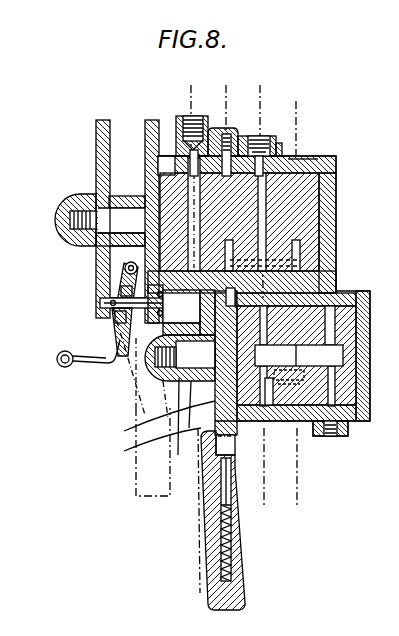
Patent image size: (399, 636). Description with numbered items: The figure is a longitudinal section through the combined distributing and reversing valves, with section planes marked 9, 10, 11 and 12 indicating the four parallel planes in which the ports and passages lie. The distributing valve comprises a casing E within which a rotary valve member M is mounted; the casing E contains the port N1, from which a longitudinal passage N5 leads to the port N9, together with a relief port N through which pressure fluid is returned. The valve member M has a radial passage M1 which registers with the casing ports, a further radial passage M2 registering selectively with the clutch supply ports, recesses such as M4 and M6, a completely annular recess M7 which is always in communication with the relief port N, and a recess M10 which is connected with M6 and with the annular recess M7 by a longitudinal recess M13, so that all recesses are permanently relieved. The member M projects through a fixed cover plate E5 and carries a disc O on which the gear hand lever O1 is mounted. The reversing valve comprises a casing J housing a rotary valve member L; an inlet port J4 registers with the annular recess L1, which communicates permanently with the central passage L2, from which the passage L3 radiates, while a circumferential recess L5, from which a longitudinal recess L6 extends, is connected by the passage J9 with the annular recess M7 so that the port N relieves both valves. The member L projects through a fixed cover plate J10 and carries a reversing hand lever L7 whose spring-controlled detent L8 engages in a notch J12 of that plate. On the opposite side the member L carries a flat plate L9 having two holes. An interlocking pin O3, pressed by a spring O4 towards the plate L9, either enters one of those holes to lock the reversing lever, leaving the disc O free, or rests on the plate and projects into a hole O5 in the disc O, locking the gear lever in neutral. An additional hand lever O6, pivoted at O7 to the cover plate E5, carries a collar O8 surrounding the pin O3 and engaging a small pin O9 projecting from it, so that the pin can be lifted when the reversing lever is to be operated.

The disc O is at (88, 124).
The hand lever O1 is at (128, 475).
The interlocking pin O3 is at (112, 307).
The spring O4 is at (116, 346).
The hole O5 is at (98, 295).
The additional hand lever O6 is at (56, 360).
The pivot O7 is at (118, 262).
The collar O8 is at (108, 321).
The small pin O9 is at (95, 300).
The casing E is at (333, 148).
The cover plate E5 is at (140, 112).
The rotary valve member M is at (331, 163).
The radial passage M1 is at (155, 176).
The radial passage M2 is at (118, 255).
The recess M4 is at (245, 135).
The recess M6 is at (290, 193).
The annular recess M7 is at (291, 152).
The recess M10 is at (284, 257).
The longitudinal recess M13 is at (306, 220).
The relief port N is at (267, 139).
The port N1 is at (168, 135).
The longitudinal passage N5 is at (212, 125).
The port N9 is at (223, 126).
The casing J is at (361, 413).
The inlet port J4 is at (321, 428).
The passage J9 is at (290, 269).
The cover plate J10 is at (158, 420).
The notch J12 is at (151, 444).
The rotary valve member L is at (337, 323).
The annular recess L1 is at (351, 298).
The central passage L2 is at (306, 347).
The passage L3 is at (235, 447).
The recess L5 is at (335, 284).
The recess L6 is at (272, 419).
The reversing hand lever L7 is at (240, 559).
The spring-controlled detent L8 is at (217, 472).
The flat plate L9 is at (140, 338).
The section line 9 is at (189, 330).
The section line 10 is at (237, 178).
The section line 11 is at (268, 301).
The section line 12 is at (301, 309).